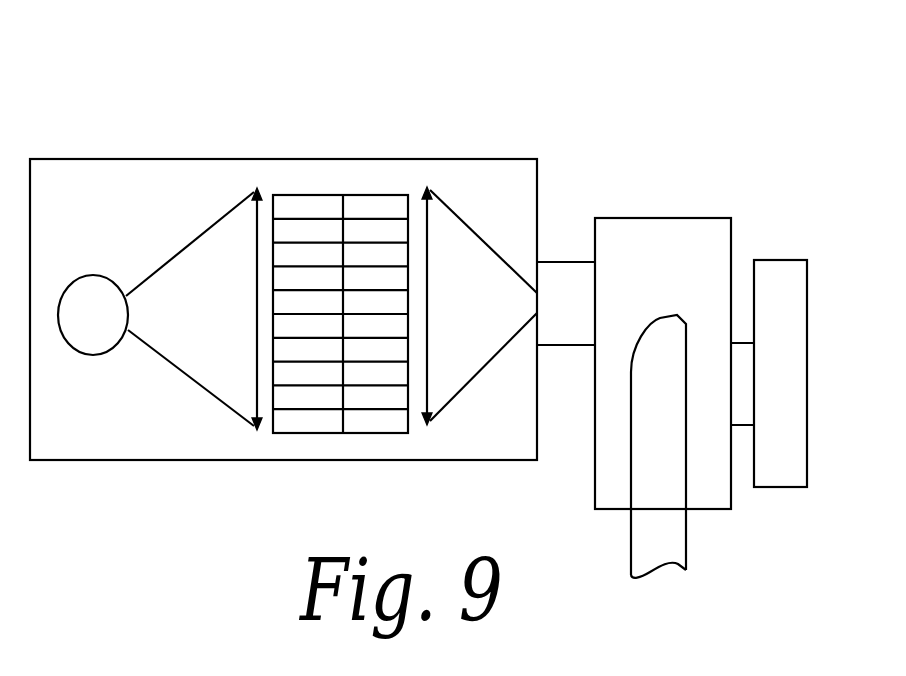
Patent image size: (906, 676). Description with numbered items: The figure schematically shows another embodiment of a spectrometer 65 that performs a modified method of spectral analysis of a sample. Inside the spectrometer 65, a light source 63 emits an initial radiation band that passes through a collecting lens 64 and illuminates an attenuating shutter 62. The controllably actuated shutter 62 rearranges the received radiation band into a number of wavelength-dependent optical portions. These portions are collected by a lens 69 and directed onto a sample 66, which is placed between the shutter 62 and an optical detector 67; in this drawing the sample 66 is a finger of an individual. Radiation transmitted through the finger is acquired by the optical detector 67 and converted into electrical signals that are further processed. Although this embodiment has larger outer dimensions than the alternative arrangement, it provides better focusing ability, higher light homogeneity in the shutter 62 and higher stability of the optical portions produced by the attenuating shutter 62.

The attenuating shutter 62 is at (345, 194).
The light source 63 is at (88, 302).
The collecting lens 64 is at (259, 188).
The spectrometer 65 is at (187, 159).
The sample 66 is at (660, 318).
The optical detector 67 is at (770, 323).
The lens 69 is at (428, 297).